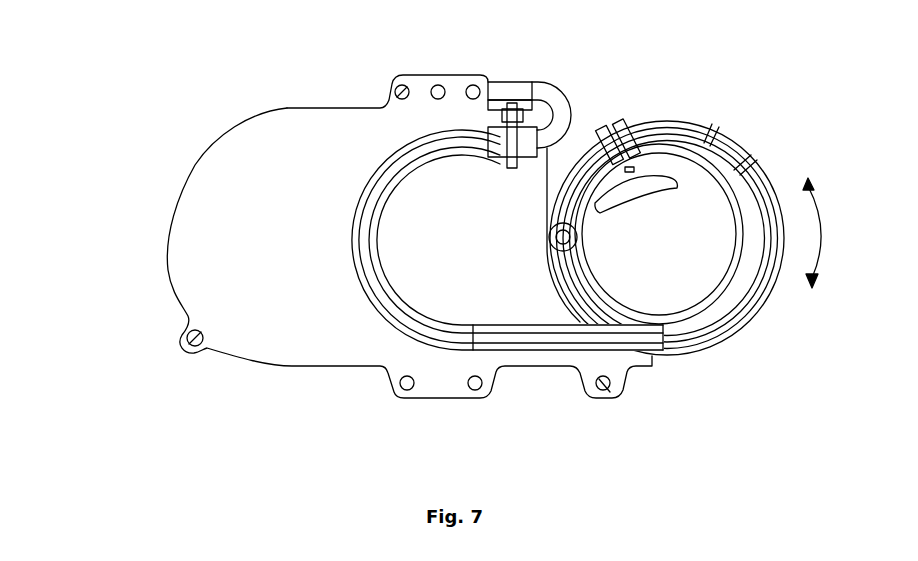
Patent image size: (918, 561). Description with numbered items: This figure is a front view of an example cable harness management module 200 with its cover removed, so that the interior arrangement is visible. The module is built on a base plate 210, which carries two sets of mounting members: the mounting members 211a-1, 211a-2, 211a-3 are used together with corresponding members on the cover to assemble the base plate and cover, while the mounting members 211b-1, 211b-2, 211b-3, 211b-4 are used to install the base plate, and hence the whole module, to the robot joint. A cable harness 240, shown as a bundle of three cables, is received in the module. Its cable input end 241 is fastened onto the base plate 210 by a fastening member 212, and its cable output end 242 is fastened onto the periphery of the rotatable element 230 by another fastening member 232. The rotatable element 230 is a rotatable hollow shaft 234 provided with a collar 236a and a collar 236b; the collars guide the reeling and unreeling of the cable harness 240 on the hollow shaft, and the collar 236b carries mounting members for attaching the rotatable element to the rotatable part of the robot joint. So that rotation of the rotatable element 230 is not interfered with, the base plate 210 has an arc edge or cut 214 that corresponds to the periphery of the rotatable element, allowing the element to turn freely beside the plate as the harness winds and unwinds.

The cable harness management module 200 is at (137, 96).
The base plate 210 is at (173, 206).
The mounting member 211a-1 is at (388, 100).
The mounting member 211a-2 is at (610, 392).
The mounting member 211a-3 is at (189, 342).
The mounting member 211b-1 is at (432, 92).
The mounting member 211b-2 is at (480, 92).
The mounting member 211b-3 is at (478, 383).
The mounting member 211b-4 is at (404, 383).
The fastening member 212 is at (492, 157).
The arc edge or cut 214 is at (545, 277).
The rotatable element 230 is at (746, 150).
The fastening member 232 is at (610, 130).
The rotatable hollow shaft 234 is at (708, 292).
The collar 236a is at (582, 236).
The collar 236b is at (713, 125).
The cable harness 240 is at (372, 238).
The cable input end 241 is at (548, 96).
The cable output end 242 is at (658, 196).